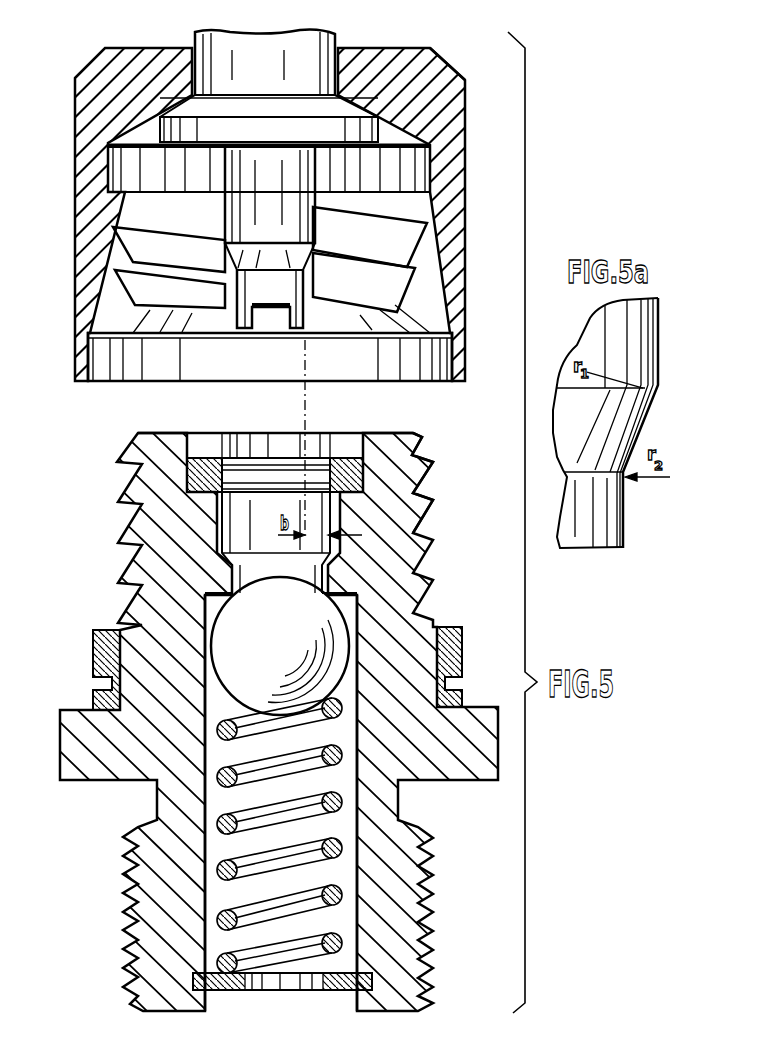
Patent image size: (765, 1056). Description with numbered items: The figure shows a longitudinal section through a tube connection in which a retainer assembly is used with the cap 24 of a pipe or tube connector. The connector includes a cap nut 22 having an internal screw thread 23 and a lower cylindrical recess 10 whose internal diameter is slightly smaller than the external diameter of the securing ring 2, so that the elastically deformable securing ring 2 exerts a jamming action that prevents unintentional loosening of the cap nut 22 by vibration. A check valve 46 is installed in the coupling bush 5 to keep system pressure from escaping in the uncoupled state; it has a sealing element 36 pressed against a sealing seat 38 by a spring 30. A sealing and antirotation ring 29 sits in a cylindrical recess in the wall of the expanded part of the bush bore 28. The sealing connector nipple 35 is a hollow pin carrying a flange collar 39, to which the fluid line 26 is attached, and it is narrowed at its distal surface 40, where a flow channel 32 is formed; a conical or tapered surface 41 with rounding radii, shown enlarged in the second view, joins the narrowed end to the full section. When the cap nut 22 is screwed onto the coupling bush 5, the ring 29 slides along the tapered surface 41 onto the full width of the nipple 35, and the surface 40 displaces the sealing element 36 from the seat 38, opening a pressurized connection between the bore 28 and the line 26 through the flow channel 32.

In FIG. 5, the securing ring 2 is at (447, 662).
In FIG. 5, the coupling bush 5 is at (456, 753).
In FIG. 5, the lower cylindrical recess 10 is at (100, 363).
In FIG. 5, the cap nut 22 is at (413, 103).
In FIG. 5, the internal screw thread 23 is at (425, 245).
In FIG. 5, the cap of the pipe or tube connector 24 is at (450, 46).
In FIG. 5, the fluid line 26 is at (213, 37).
In FIG. 5, the bush bore 28 is at (215, 527).
In FIG. 5, the sealing and antirotation ring 29 is at (187, 480).
In FIG. 5, the spring 30 is at (243, 855).
In FIG. 5, the flow channel 32 is at (268, 320).
In FIG. 5, the sealing connector nipple 35 is at (255, 167).
In FIG. 5a, the sealing connector nipple 35 is at (553, 433).
In FIG. 5, the sealing element 36 is at (265, 655).
In FIG. 5, the sealing seat 38 is at (333, 587).
In FIG. 5, the flange collar 39 is at (350, 147).
In FIG. 5, the distal or front surface 40 is at (243, 330).
In FIG. 5, the conical or tapered surface 41 is at (230, 260).
In FIG. 5a, the conical or tapered surface 41 is at (650, 423).
In FIG. 5, the check valve 46 is at (200, 687).